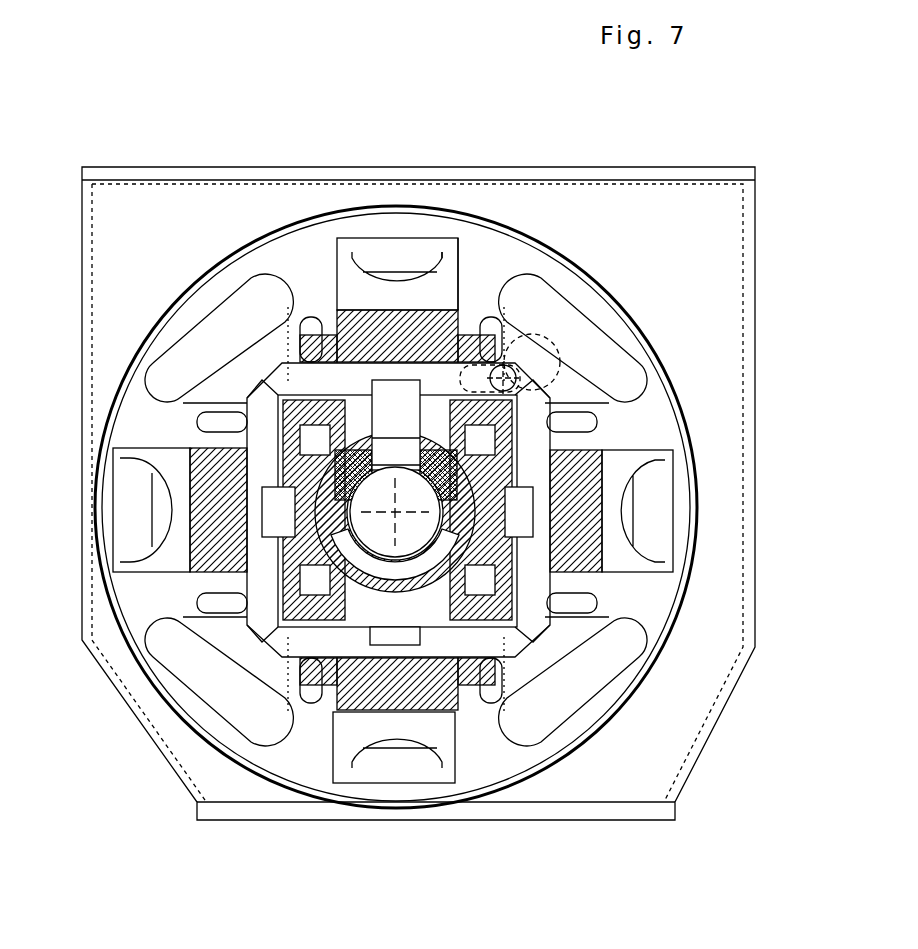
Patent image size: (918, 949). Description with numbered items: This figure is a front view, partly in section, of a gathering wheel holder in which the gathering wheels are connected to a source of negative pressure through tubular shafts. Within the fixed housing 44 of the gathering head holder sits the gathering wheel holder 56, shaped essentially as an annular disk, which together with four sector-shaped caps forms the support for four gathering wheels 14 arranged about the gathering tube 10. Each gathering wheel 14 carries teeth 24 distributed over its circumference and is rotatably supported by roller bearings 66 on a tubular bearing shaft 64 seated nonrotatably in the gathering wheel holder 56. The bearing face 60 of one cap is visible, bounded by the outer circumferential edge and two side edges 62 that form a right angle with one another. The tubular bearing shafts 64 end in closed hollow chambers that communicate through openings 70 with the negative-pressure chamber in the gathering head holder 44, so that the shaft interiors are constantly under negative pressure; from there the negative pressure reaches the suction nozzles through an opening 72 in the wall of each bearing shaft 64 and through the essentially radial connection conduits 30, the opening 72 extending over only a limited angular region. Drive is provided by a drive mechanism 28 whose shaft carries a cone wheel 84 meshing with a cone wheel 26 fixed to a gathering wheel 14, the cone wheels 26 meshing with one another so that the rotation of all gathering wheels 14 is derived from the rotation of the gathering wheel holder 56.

The gathering tube 10 is at (455, 535).
The gathering wheel 14 is at (375, 330).
The teeth 24 is at (465, 262).
The cone wheel 26 is at (287, 310).
The drive mechanism 28 is at (522, 368).
The connection conduits 30 is at (392, 443).
The housing of the gathering head holder 44 is at (755, 462).
The gathering wheel holder 56 is at (668, 368).
The bearing face 60 is at (148, 421).
The side edges 62 is at (335, 243).
The bearing shafts 64 is at (273, 363).
The roller bearings 66 is at (307, 318).
The openings 70 is at (567, 703).
The opening 72 is at (450, 280).
The cone wheel 84 is at (510, 376).